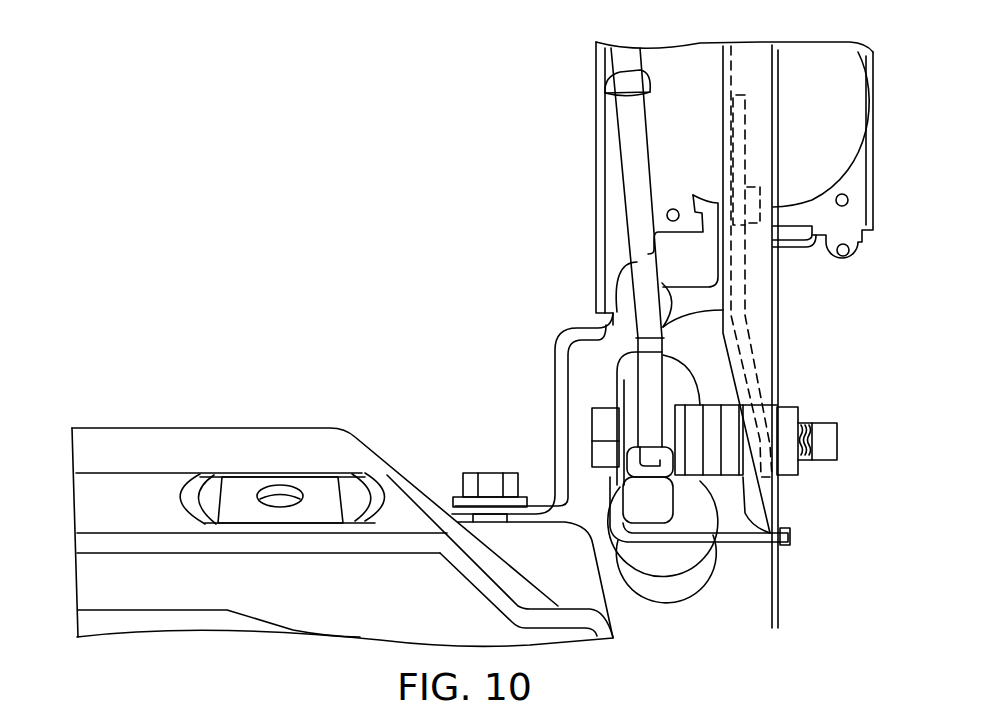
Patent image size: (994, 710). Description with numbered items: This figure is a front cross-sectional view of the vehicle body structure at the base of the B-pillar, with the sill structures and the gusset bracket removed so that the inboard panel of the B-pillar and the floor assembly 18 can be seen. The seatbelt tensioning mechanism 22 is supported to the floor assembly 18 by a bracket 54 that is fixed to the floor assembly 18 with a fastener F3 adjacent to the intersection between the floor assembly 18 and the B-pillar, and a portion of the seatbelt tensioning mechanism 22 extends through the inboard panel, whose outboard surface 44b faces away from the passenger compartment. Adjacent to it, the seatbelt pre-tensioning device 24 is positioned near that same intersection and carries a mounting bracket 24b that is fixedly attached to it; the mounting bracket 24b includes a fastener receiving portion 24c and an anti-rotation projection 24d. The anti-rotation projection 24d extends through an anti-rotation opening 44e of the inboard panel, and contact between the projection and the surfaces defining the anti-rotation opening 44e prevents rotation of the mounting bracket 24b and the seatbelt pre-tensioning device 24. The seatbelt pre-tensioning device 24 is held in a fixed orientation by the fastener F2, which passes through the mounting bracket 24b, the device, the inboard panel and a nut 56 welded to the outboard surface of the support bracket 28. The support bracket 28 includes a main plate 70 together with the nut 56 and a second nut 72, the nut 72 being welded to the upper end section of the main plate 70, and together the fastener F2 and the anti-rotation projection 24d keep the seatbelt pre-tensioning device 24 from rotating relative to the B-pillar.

The floor assembly 18 is at (230, 428).
The seatbelt tensioning mechanism 22 is at (818, 75).
The seatbelt pre-tensioning device 24 is at (672, 587).
The mounting bracket 24b is at (643, 498).
The fastener receiving portion 24c is at (700, 432).
The anti-rotation projection 24d is at (735, 547).
The support bracket 28 is at (748, 114).
The outboard surface 44b is at (732, 68).
The anti-rotation opening 44e is at (782, 531).
The bracket 54 is at (554, 395).
The nut 56 is at (788, 418).
The main plate 70 is at (747, 153).
The nut 72 is at (758, 190).
The fastener F2 is at (602, 428).
The fastener F3 is at (490, 483).